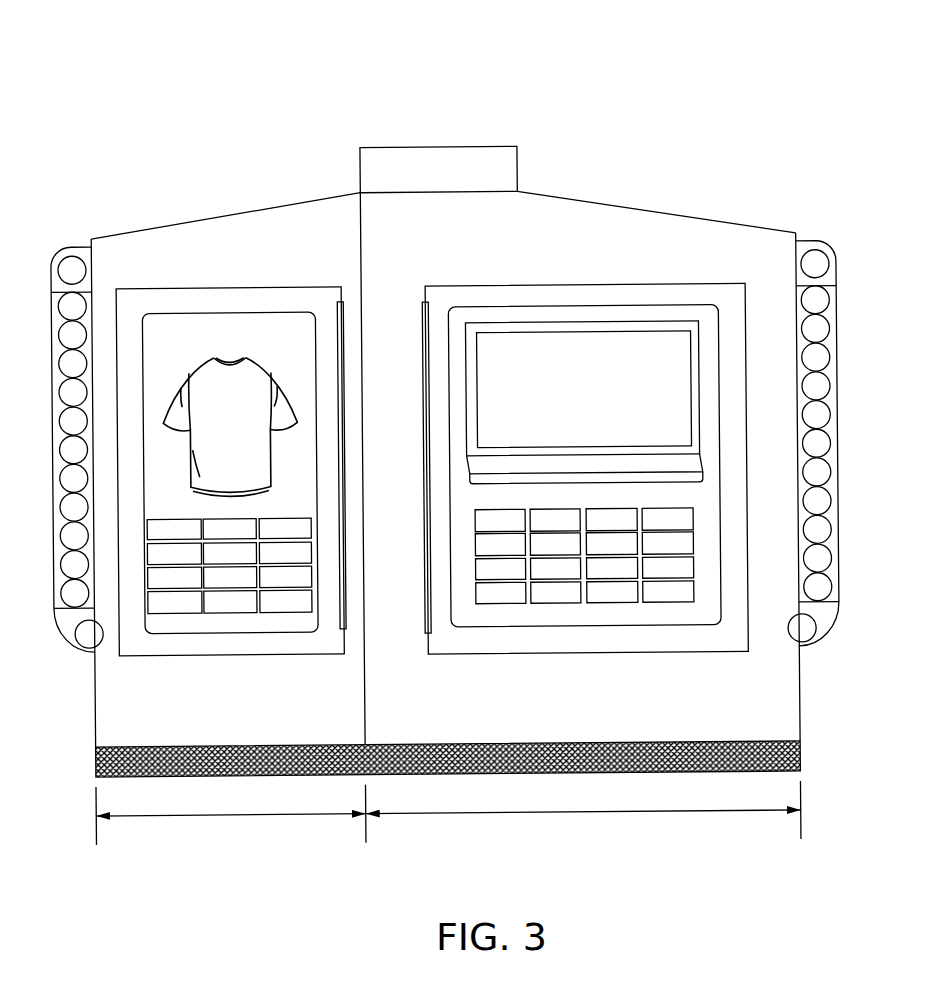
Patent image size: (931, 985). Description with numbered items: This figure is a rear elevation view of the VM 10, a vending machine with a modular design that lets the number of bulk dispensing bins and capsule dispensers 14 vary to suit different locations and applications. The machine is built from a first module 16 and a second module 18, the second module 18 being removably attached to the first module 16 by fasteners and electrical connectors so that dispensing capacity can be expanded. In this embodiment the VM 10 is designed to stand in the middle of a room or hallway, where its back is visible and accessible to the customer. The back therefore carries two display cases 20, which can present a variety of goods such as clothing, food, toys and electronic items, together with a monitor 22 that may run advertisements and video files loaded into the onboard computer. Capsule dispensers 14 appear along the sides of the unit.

The VM 10 is at (309, 82).
The capsule dispensers 14 is at (62, 254).
The first module 16 is at (573, 815).
The second module 18 is at (229, 815).
The display cases 20 is at (192, 287).
The monitor 22 is at (678, 320).